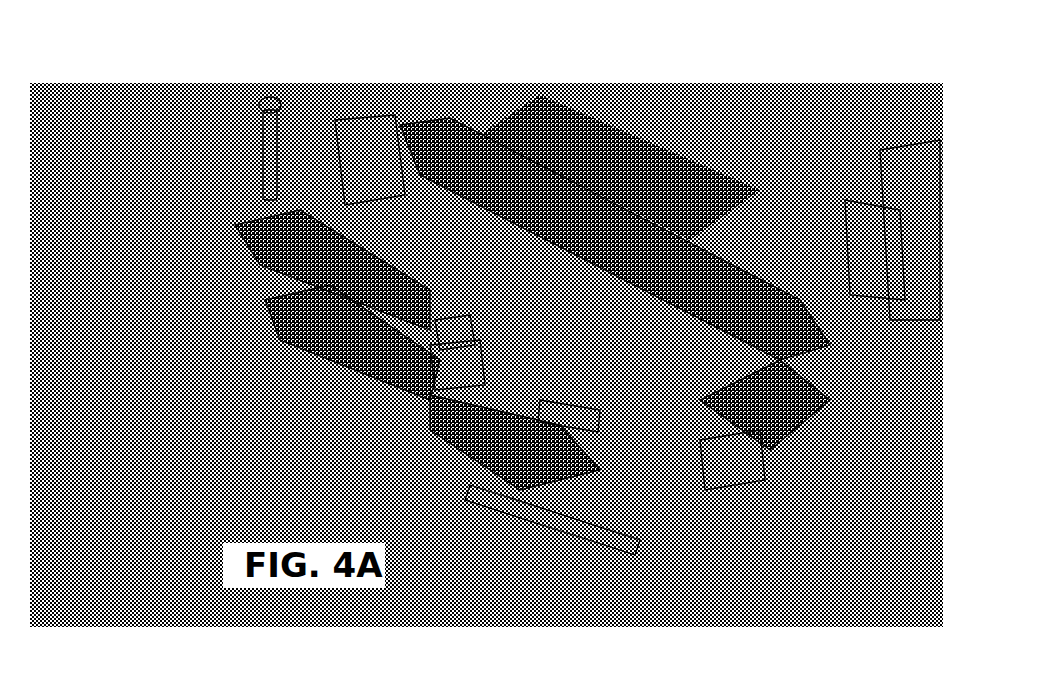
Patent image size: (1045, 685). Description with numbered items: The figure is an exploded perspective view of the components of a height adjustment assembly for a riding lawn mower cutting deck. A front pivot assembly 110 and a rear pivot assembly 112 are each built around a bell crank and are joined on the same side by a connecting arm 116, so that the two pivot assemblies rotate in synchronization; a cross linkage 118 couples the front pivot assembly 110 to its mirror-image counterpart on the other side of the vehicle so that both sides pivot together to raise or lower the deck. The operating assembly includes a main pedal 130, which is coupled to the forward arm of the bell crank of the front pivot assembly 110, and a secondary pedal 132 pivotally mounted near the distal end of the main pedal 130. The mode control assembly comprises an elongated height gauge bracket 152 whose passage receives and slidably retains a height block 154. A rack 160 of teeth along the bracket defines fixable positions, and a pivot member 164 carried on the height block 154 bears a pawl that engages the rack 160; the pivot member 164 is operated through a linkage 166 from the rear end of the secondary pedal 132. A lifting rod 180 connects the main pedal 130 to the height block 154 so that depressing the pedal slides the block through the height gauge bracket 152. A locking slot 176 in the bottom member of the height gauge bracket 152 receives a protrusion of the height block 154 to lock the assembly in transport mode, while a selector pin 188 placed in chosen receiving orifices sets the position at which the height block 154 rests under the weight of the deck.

The front pivot assembly 110 is at (807, 446).
The rear pivot assembly 112 is at (330, 113).
The connecting arm 116 is at (615, 205).
The cross linkage 118 is at (886, 160).
The main pedal 130 is at (851, 166).
The secondary pedal 132 is at (710, 510).
The height gauge bracket 152 is at (290, 270).
The height block 154 is at (352, 408).
The rack 160 is at (297, 342).
The pivot member 164 is at (515, 487).
The linkage 166 is at (552, 551).
The locking slot 176 is at (362, 380).
The lifting rod 180 is at (587, 410).
The selector pin 188 is at (226, 125).